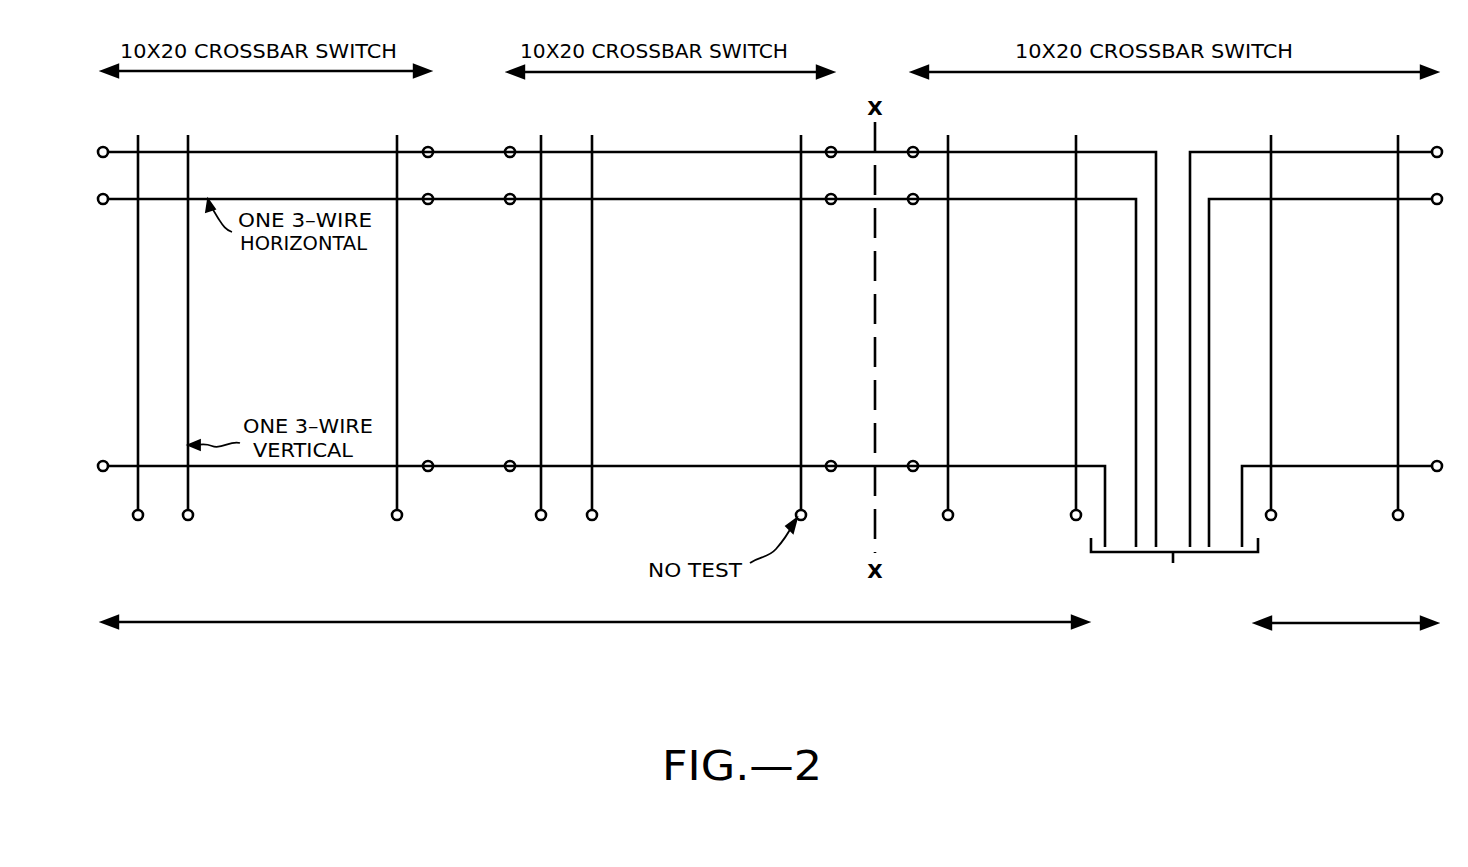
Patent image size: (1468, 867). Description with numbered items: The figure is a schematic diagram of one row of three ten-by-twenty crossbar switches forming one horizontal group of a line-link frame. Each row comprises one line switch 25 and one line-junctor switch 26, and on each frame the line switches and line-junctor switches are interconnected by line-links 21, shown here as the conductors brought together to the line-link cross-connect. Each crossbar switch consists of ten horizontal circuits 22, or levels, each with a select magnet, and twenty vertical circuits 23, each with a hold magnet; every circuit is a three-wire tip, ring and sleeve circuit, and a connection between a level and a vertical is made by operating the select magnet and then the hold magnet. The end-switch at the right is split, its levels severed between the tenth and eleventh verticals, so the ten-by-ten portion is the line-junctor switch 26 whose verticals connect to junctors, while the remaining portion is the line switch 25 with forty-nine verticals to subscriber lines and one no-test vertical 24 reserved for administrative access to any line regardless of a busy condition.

The line-links 21 is at (1258, 547).
The horizontal circuits 22 is at (647, 201).
The vertical circuits 23 is at (592, 335).
The no-test vertical 24 is at (801, 415).
The line switch 25 is at (310, 622).
The line-junctor switch 26 is at (1365, 623).